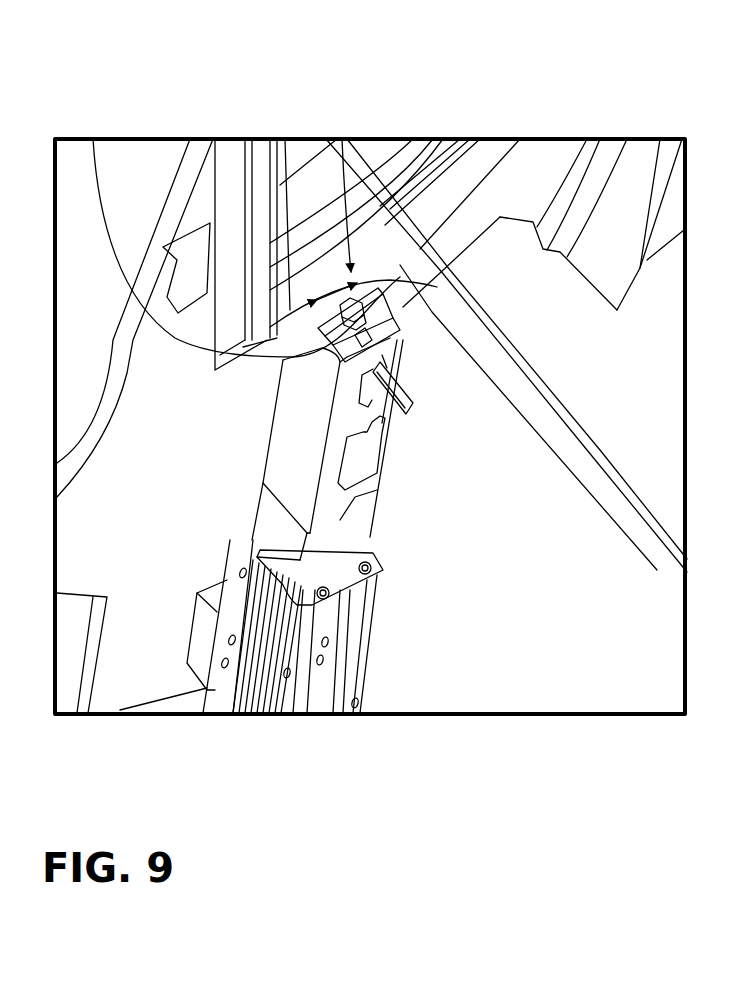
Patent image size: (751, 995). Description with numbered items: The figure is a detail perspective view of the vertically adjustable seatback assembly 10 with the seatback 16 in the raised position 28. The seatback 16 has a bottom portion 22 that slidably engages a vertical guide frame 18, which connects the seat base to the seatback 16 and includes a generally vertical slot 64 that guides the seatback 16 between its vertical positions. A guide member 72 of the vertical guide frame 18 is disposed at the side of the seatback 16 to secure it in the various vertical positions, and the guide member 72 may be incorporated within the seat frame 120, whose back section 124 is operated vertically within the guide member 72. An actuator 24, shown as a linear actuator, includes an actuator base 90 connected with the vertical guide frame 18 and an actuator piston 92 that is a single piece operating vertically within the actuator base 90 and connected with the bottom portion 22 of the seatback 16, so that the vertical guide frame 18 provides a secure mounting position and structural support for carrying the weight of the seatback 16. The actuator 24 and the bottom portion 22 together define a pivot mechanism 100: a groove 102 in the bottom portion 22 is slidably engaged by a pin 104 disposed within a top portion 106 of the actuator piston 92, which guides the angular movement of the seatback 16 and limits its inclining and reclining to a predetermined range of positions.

The vertically adjustable seatback assembly 10 is at (178, 110).
The seatback 16 is at (437, 154).
The vertical guide frame 18 is at (141, 213).
The bottom portion of the seatback 22 is at (272, 139).
The actuator 24 is at (421, 665).
The raised position 28 is at (165, 735).
The slot 64 is at (93, 139).
The guide member 72 is at (130, 617).
The actuator base 90 is at (313, 687).
The actuator piston 92 is at (367, 487).
The pivot mechanism 100 is at (342, 139).
The groove 102 is at (395, 305).
The pin 104 is at (400, 277).
The top portion of the actuator piston 106 is at (385, 340).
The seat frame 120 is at (639, 128).
The back section 124 is at (520, 172).